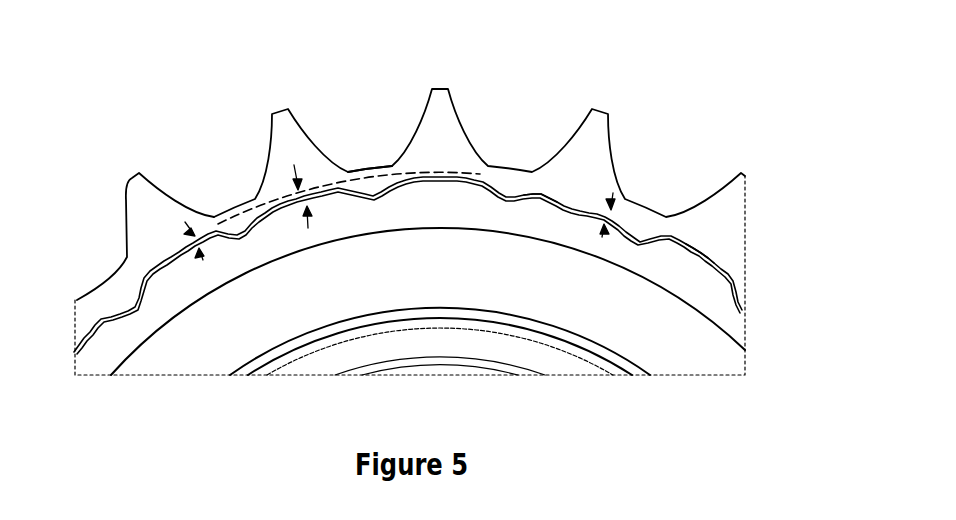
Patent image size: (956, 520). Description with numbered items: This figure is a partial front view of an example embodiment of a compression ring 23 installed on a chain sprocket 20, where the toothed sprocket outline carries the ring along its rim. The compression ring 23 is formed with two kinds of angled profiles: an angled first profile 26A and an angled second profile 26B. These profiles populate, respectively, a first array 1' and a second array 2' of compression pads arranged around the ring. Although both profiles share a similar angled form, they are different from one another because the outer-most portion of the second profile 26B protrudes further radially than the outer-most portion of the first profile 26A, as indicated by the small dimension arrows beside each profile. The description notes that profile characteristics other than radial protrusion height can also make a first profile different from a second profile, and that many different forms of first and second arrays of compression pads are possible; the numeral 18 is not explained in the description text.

The chain sprocket 20 is at (682, 140).
The tooth 18 is at (146, 179).
The compression ring 23 is at (372, 188).
The first profile 26A is at (281, 210).
The second profile 26B is at (175, 252).
The first array 1' is at (544, 136).
The second array 2' is at (734, 199).